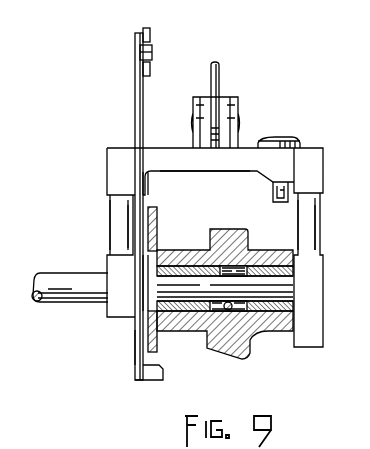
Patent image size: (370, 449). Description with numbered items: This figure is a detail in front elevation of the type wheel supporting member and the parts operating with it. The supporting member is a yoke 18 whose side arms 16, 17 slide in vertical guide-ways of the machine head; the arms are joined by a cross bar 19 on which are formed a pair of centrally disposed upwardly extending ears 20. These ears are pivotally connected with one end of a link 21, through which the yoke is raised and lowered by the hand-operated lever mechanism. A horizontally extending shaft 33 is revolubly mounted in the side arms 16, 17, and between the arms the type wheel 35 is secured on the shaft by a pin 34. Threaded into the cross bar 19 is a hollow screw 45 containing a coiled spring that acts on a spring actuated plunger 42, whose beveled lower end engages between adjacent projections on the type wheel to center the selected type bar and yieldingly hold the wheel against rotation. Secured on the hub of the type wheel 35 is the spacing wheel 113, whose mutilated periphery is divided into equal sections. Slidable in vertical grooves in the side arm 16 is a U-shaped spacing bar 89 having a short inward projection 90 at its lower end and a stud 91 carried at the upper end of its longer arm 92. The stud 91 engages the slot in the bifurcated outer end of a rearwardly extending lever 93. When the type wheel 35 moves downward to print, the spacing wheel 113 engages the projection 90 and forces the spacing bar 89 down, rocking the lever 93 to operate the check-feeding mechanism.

The side arm 16 is at (114, 221).
The side arm 17 is at (311, 215).
The yoke 18 is at (223, 173).
The cross bar 19 is at (173, 149).
The ears 20 is at (238, 105).
The link 21 is at (220, 80).
The shaft 33 is at (70, 303).
The pin 34 is at (244, 254).
The type wheel 35 is at (264, 336).
The spring actuated plunger 42 is at (285, 188).
The hollow screw 45 is at (290, 138).
The spacing bar 89 is at (136, 349).
The inward projection 90 is at (150, 375).
The stud 91 is at (152, 51).
The longer arm 92 is at (137, 60).
The lever 93 is at (150, 33).
The spacing wheel 113 is at (157, 215).